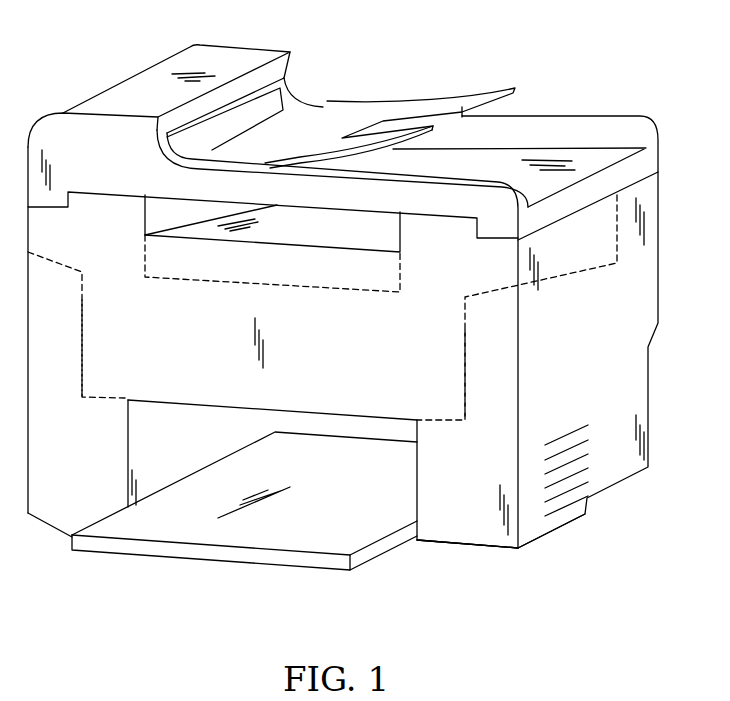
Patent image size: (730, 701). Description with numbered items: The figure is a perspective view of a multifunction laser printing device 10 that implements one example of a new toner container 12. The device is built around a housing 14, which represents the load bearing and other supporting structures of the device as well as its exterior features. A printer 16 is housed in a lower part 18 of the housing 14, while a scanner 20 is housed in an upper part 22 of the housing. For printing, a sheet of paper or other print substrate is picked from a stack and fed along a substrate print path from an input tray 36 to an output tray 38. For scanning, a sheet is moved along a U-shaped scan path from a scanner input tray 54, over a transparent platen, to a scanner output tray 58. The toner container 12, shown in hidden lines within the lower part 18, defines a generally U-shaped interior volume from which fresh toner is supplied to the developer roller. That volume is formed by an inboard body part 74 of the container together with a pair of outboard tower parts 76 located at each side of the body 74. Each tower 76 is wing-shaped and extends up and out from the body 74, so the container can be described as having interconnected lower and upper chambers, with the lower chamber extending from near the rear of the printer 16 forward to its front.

The multifunction laser printing device 10 is at (440, 65).
The toner container 12 is at (437, 214).
The housing 14 is at (668, 167).
The printer 16 is at (435, 559).
The lower part 18 is at (487, 537).
The scanner 20 is at (335, 82).
The upper part 22 is at (250, 58).
The input tray 36 is at (373, 468).
The output tray 38 is at (343, 228).
The input tray 54 is at (364, 110).
The output tray 58 is at (558, 160).
The body part 74 is at (80, 365).
The tower parts 76 is at (60, 263).